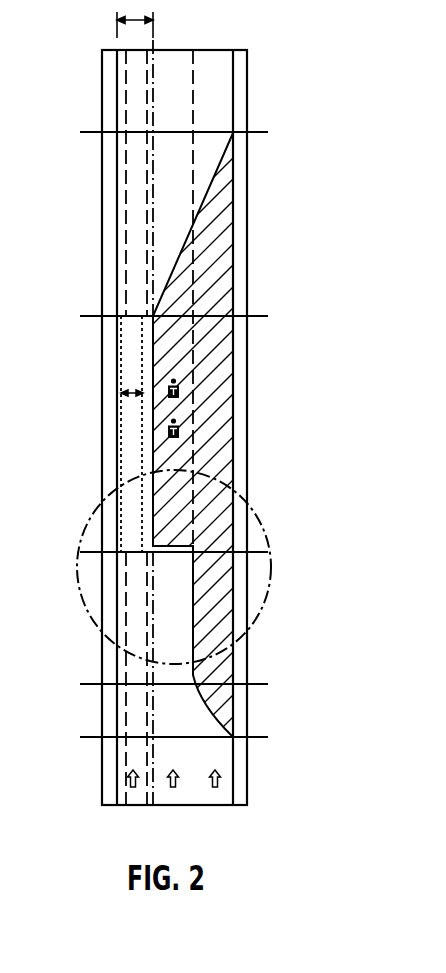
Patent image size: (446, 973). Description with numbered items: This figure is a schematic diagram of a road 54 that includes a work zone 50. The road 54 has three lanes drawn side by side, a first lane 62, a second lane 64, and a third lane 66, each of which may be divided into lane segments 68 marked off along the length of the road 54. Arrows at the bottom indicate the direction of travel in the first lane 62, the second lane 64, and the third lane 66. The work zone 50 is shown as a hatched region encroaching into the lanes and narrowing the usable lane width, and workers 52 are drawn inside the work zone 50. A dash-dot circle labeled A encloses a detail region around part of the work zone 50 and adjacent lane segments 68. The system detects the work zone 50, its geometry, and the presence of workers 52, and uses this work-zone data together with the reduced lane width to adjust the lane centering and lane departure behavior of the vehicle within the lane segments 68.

The road 54 is at (102, 80).
The lane segment 68 is at (130, 189).
The work zone 50 is at (218, 270).
The workers 52 is at (179, 386).
The detail region A is at (273, 560).
The first lane 62 is at (134, 795).
The second lane 64 is at (167, 795).
The third lane 66 is at (215, 795).